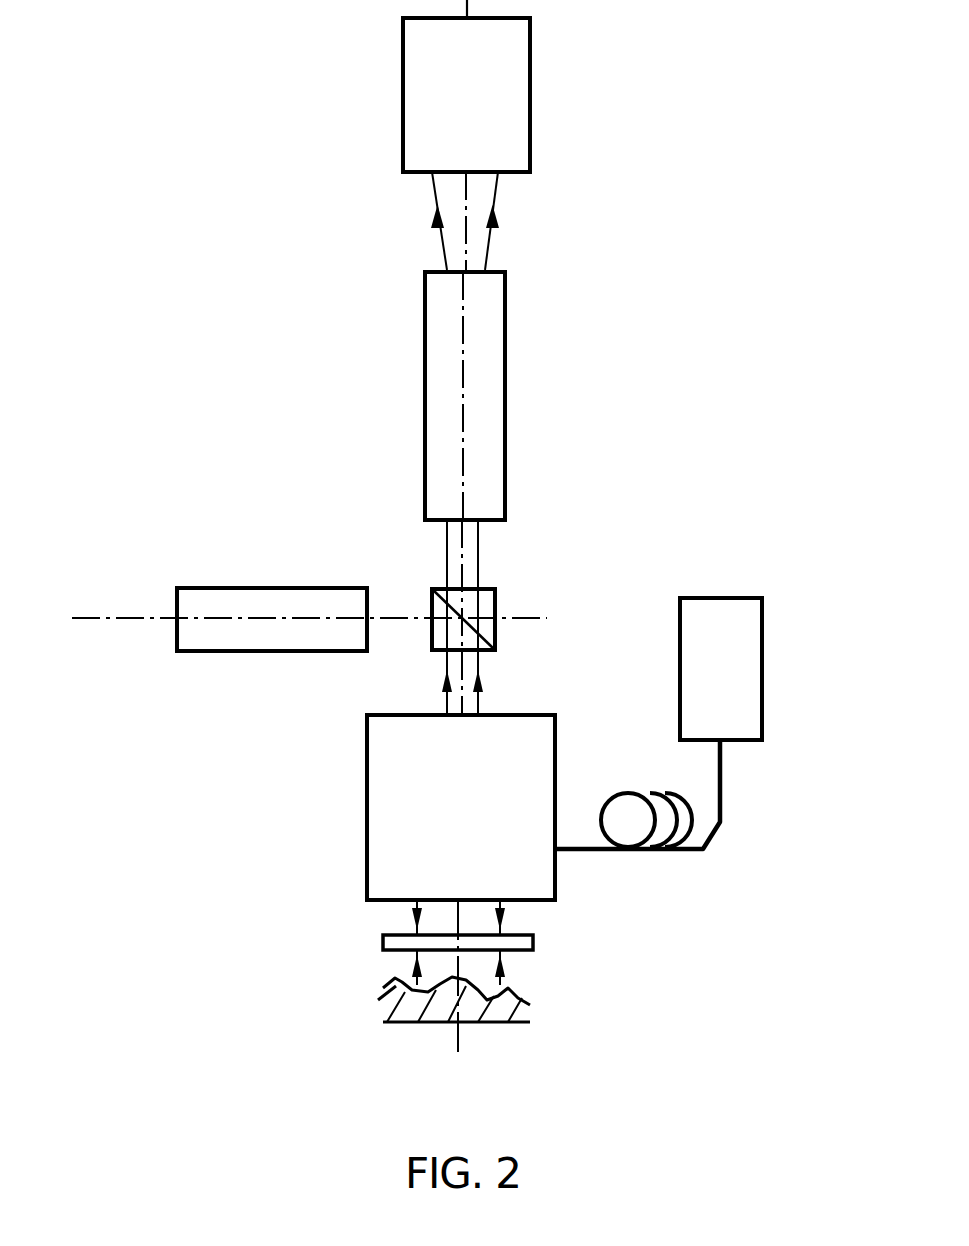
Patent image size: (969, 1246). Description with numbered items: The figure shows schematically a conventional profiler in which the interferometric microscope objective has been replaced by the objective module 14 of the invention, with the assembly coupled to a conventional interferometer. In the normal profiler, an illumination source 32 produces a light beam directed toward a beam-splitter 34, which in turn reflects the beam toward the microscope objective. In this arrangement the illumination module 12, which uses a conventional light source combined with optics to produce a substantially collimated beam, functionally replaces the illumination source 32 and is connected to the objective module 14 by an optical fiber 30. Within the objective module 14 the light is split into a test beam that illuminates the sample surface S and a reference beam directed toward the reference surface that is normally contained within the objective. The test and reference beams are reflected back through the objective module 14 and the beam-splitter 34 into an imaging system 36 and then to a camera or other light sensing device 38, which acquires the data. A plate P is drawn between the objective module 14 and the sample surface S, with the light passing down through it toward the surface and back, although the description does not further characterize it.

The camera or other light sensing device 38 is at (510, 65).
The imaging system 36 is at (483, 398).
The beam-splitter 34 is at (492, 600).
The illumination source 32 is at (192, 608).
The illumination module 12 is at (743, 627).
The objective module 14 is at (378, 807).
The optical fiber 30 is at (717, 835).
The plate/window P is at (535, 943).
The sample surface S is at (530, 1002).